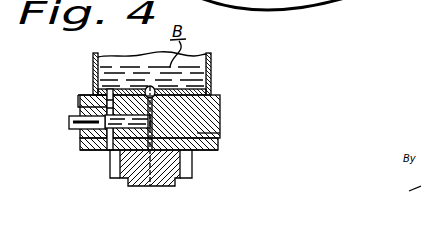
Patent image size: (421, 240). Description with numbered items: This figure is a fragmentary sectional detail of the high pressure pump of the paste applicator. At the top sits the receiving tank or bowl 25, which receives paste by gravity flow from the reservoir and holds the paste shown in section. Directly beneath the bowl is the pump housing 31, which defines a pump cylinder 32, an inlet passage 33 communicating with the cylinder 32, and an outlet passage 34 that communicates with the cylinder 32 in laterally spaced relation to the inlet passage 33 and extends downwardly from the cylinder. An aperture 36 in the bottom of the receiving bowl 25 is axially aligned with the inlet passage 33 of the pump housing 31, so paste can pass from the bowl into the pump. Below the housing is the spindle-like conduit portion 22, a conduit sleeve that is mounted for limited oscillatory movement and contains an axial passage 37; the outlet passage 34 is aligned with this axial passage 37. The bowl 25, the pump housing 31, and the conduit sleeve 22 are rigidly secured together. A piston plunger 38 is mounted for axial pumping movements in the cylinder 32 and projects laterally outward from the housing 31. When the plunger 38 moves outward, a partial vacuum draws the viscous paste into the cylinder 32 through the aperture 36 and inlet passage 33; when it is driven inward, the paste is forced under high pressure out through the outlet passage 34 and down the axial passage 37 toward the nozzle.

The spindle-like conduit portion 22 is at (126, 187).
The receiving tank or bowl 25 is at (212, 63).
The pump housing 31 is at (220, 105).
The pump cylinder 32 is at (97, 150).
The inlet passage 33 is at (79, 102).
The outlet passage 34 is at (213, 143).
The aperture 36 is at (94, 88).
The axial passage 37 is at (150, 188).
The piston plunger 38 is at (69, 123).